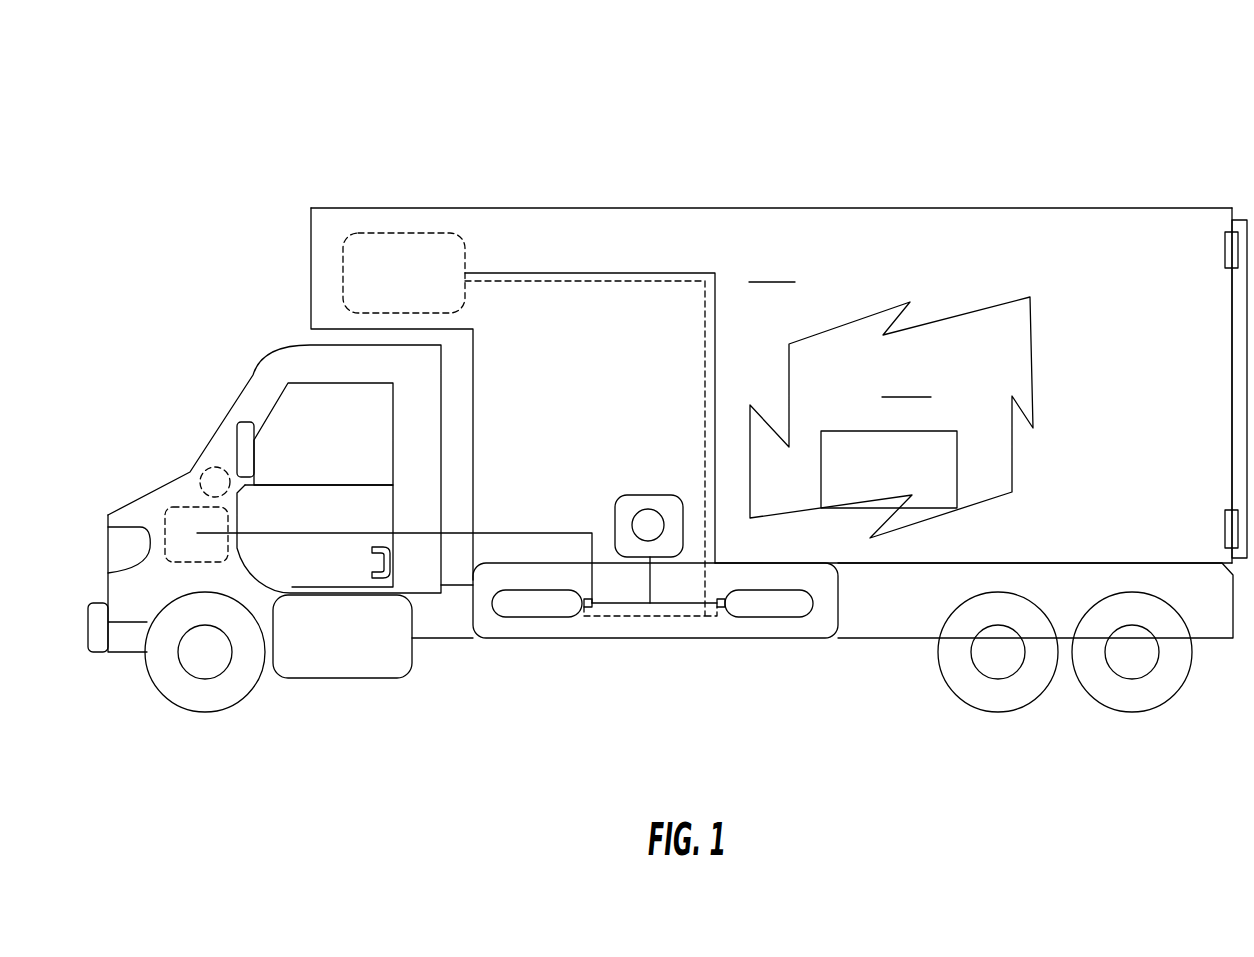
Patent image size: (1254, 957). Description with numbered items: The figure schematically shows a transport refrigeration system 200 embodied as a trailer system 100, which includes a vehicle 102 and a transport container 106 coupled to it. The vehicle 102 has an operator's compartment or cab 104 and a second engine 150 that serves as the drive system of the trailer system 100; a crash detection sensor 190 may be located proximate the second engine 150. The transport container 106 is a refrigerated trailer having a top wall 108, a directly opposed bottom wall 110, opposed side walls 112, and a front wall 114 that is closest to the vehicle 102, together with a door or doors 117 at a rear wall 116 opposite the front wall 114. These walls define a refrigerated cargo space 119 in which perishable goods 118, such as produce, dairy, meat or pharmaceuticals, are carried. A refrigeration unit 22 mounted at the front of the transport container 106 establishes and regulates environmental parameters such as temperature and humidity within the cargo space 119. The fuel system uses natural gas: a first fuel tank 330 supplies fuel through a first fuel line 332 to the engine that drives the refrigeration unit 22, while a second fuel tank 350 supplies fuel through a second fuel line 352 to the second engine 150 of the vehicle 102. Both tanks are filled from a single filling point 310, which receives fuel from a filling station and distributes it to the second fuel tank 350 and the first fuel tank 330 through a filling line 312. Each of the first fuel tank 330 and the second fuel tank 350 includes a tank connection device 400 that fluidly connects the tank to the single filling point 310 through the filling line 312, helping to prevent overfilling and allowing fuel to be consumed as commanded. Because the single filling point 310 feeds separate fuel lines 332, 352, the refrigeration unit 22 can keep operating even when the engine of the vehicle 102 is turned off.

The trailer system 100 is at (238, 157).
The vehicle 102 is at (120, 653).
The cab 104 is at (285, 427).
The transport container 106 is at (905, 208).
The top wall 108 is at (712, 208).
The bottom wall 110 is at (1017, 562).
The side walls 112 is at (840, 324).
The front wall 114 is at (473, 410).
The rear wall 116 is at (1232, 315).
The doors 117 is at (1243, 397).
The perishable goods 118 is at (821, 459).
The refrigerated cargo space 119 is at (1000, 361).
The transport refrigeration system 200 is at (468, 167).
The refrigeration unit 22 is at (413, 233).
The first fuel line 332 is at (620, 273).
The single filling point 310 is at (650, 520).
The second fuel line 352 is at (285, 533).
The second engine 150 is at (170, 505).
The crash detection sensor 190 is at (212, 468).
The filling line 312 is at (677, 604).
The tank connection device 400 is at (592, 602).
The second fuel tank 350 is at (490, 605).
The first fuel tank 330 is at (812, 593).